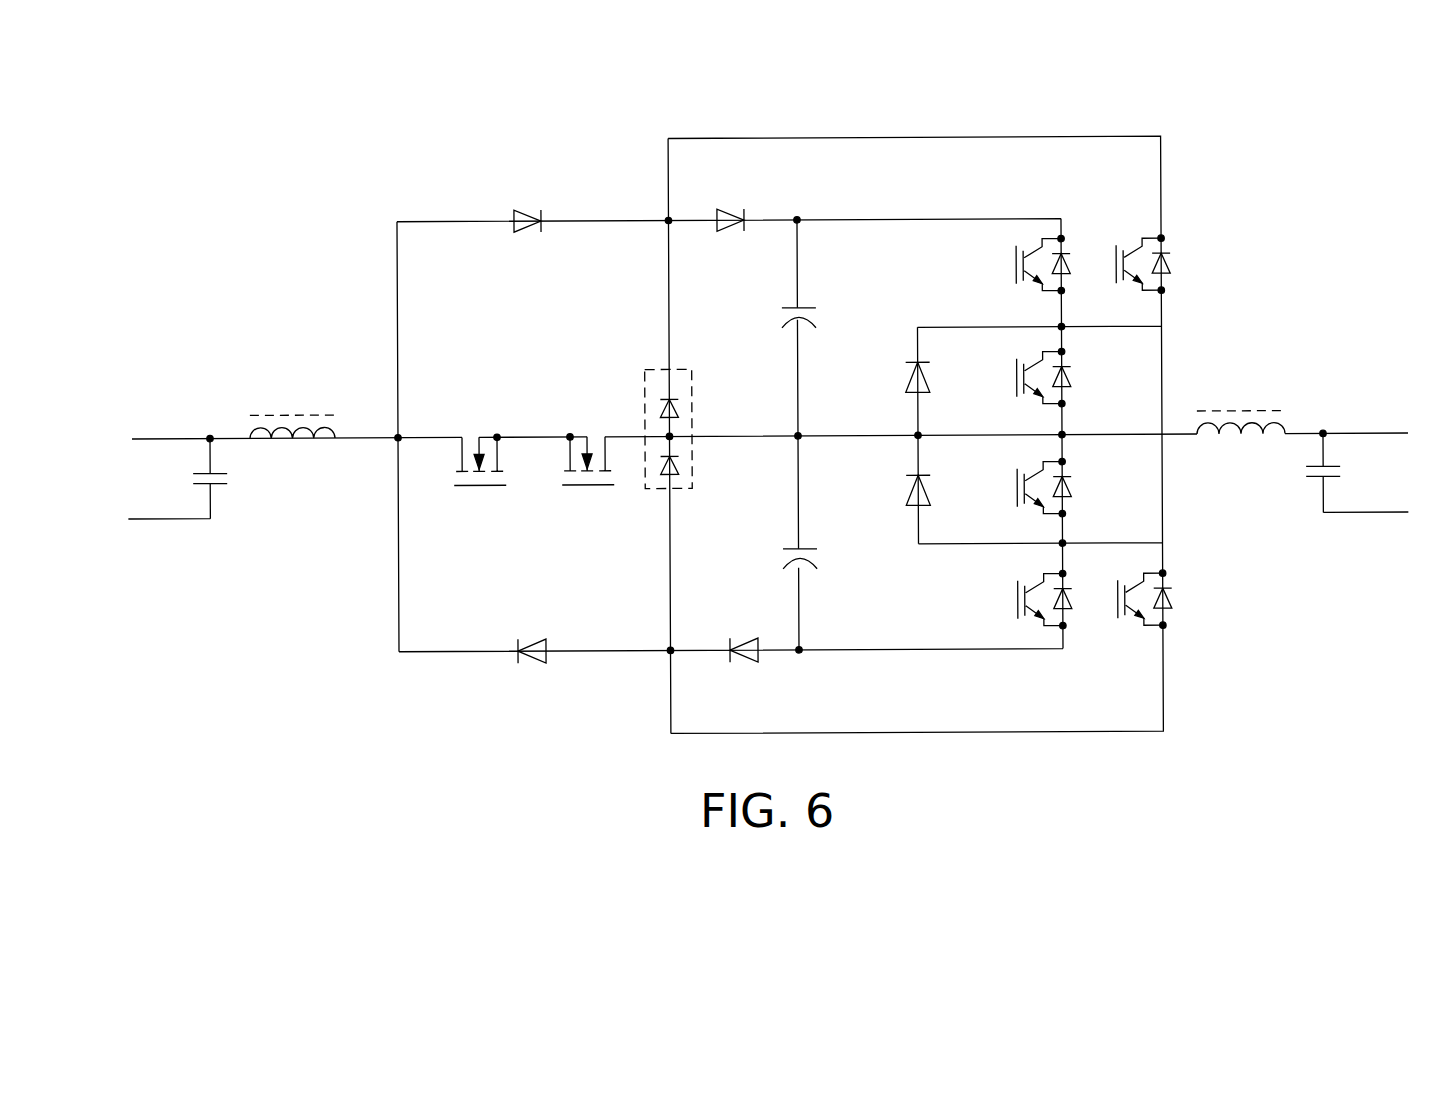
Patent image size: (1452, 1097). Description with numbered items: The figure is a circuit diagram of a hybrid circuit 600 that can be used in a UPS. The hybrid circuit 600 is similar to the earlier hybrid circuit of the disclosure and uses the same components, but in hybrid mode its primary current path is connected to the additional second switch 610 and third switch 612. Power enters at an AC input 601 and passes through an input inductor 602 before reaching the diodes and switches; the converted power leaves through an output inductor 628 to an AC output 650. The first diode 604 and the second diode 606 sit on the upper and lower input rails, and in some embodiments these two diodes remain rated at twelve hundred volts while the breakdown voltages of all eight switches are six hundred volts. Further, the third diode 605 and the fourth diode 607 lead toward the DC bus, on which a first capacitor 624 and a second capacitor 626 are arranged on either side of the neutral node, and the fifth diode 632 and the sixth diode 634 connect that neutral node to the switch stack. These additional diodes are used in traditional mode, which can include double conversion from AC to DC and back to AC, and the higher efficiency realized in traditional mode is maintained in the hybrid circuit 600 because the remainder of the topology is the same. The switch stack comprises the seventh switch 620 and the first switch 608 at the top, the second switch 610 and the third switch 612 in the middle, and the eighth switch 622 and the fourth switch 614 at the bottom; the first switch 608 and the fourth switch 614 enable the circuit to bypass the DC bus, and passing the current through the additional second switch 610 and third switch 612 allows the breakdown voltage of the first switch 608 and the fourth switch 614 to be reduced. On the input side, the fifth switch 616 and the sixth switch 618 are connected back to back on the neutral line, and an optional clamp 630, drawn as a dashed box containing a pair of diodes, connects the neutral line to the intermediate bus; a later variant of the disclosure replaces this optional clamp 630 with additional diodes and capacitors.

The hybrid circuit 600 is at (1273, 192).
The AC input 601 is at (143, 432).
The input inductor 602 is at (290, 411).
The diode D1 604 is at (528, 204).
The diode D3 605 is at (730, 203).
The diode D2 606 is at (532, 667).
The diode D4 607 is at (744, 667).
The switch S1 608 is at (1175, 263).
The switch S2 610 is at (1073, 380).
The switch S3 612 is at (1073, 490).
The switch S4 614 is at (1175, 600).
The switch S5 616 is at (480, 512).
The switch S6 618 is at (588, 512).
The switch S7 620 is at (1068, 253).
The switch S8 622 is at (1070, 618).
The DC bus capacitor 624 is at (805, 302).
The DC bus capacitor 626 is at (810, 575).
The output inductor 628 is at (1240, 411).
The optional clamp 630 is at (653, 369).
The diode D5 632 is at (908, 374).
The diode D6 634 is at (908, 486).
The AC output 650 is at (1358, 431).